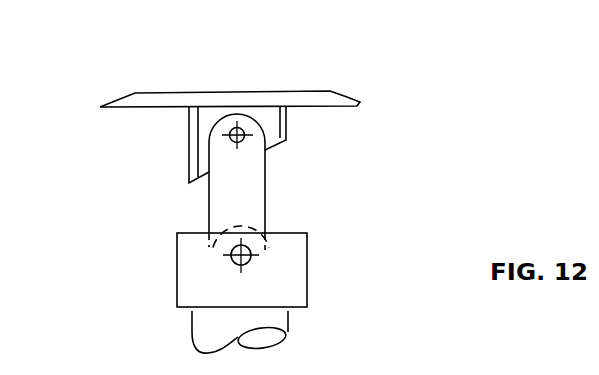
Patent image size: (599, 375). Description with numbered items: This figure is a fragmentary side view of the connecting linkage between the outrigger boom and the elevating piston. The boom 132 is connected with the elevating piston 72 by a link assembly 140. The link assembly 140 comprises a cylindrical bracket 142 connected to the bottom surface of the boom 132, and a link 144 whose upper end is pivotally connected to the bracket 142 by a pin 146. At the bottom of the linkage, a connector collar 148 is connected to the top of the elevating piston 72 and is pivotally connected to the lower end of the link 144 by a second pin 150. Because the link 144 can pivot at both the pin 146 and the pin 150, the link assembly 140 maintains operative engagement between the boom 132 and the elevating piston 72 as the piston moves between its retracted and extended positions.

The boom 132 is at (230, 98).
The link assembly 140 is at (158, 202).
The cylindrical bracket 142 is at (286, 125).
The link 144 is at (310, 191).
The pin 146 is at (243, 137).
The connector collar 148 is at (177, 274).
The pin 150 is at (323, 298).
The elevating piston 72 is at (192, 332).